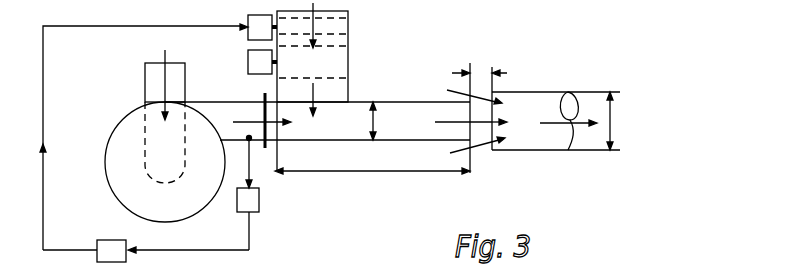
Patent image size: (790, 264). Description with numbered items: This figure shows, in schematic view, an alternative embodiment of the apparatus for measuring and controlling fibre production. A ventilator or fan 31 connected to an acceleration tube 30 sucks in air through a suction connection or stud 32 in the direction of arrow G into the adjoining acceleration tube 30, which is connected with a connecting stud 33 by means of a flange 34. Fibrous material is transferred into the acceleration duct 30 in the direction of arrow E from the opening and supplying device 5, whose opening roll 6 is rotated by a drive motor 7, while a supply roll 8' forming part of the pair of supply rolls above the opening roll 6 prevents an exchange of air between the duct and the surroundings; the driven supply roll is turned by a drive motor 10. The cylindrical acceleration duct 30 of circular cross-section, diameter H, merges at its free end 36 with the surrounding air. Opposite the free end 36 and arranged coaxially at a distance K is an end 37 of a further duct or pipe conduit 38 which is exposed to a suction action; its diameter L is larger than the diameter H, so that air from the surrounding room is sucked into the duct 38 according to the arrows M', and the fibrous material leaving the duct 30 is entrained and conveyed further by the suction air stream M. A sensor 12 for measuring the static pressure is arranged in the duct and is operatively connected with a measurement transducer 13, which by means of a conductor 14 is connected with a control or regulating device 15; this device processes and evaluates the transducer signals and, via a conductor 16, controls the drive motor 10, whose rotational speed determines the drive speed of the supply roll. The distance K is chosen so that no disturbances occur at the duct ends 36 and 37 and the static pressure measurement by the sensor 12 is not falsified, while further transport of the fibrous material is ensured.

The opening and supplying device 5 is at (347, 47).
The opening roll 6 is at (337, 67).
The drive motor 7 is at (258, 62).
The supply roll 8' is at (382, 30).
The drive motor 10 is at (247, 32).
The sensor 12 is at (253, 139).
The measurement transducer 13 is at (260, 200).
The conductor 14 is at (250, 243).
The control device 15 is at (126, 243).
The conductor 16 is at (43, 205).
The acceleration tube 30 is at (382, 141).
The ventilator 31 is at (106, 151).
The suction connection 32 is at (145, 82).
The connecting stud 33 is at (245, 101).
The flange 34 is at (290, 124).
The free end 36 is at (470, 115).
The end 37 is at (505, 137).
The duct 38 is at (572, 92).